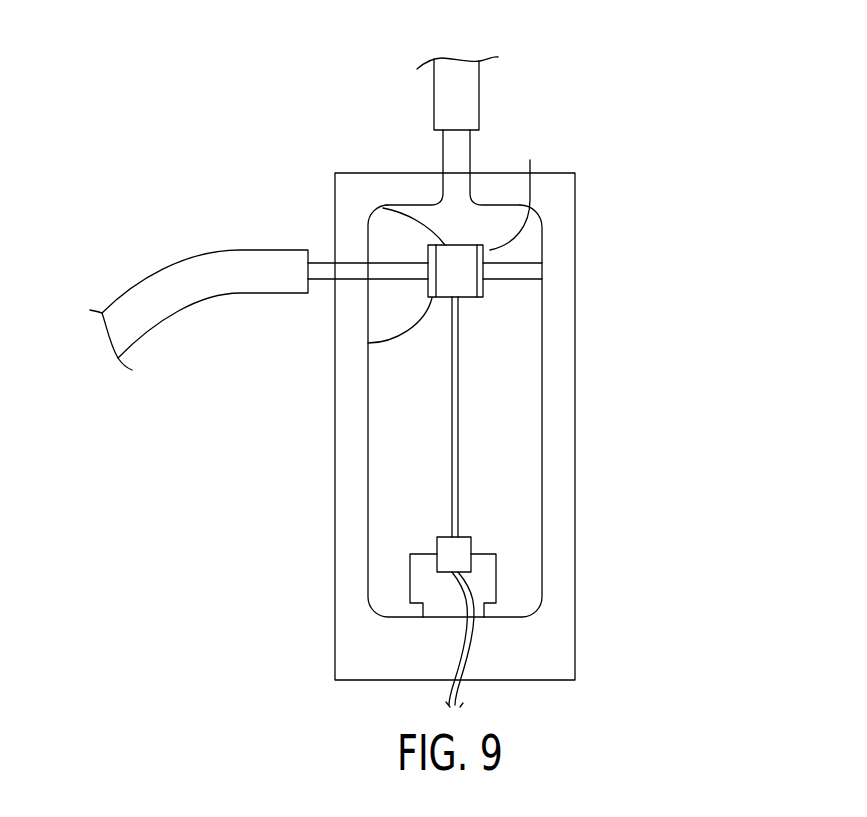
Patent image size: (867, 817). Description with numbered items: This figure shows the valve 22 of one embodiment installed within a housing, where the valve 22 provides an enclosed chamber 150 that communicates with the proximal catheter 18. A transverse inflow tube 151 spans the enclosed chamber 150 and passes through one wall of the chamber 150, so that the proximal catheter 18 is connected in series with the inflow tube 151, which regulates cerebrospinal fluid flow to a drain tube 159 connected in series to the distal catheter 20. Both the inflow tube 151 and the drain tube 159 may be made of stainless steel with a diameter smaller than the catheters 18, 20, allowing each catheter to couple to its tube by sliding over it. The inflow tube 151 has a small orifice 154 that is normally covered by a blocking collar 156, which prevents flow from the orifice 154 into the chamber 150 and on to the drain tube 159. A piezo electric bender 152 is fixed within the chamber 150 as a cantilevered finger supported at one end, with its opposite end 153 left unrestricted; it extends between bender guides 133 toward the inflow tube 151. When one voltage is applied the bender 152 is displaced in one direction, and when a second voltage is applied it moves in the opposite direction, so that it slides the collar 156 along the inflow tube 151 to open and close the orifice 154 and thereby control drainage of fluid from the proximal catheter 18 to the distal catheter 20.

The proximal catheter 18 is at (200, 302).
The distal catheter 20 is at (434, 95).
The valve 22 is at (587, 156).
The bender guides 133 is at (314, 343).
The enclosed chamber 150 is at (541, 413).
The inflow tube 151 is at (522, 263).
The piezo electric bender 152 is at (462, 387).
The unrestricted end 153 is at (458, 342).
The orifice 154 is at (505, 273).
The blocking collar 156 is at (380, 206).
The drain tube 159 is at (443, 150).